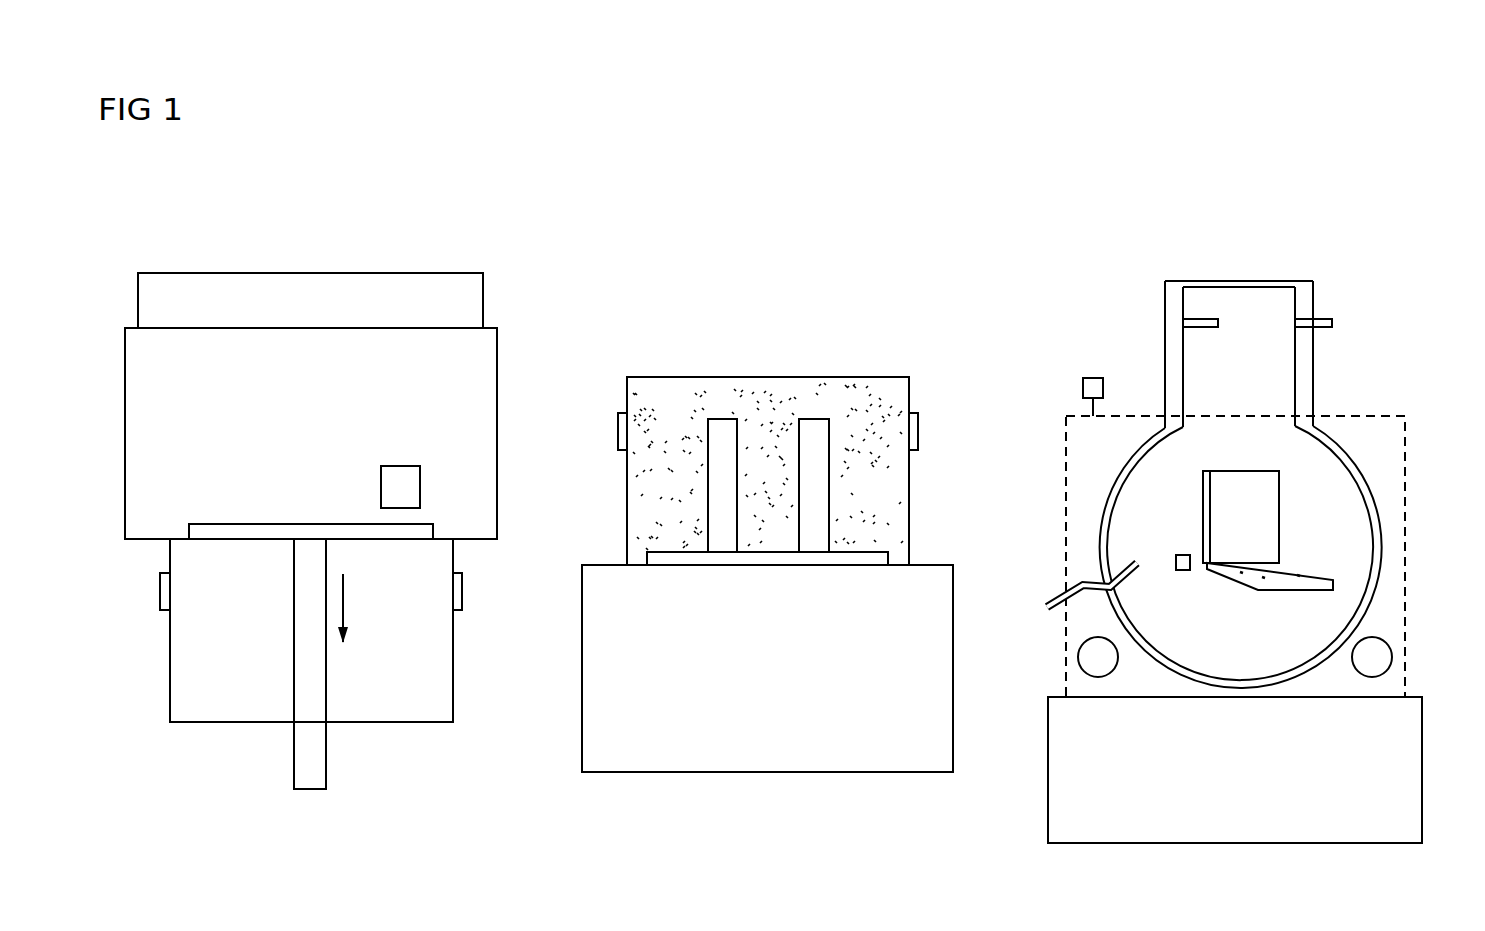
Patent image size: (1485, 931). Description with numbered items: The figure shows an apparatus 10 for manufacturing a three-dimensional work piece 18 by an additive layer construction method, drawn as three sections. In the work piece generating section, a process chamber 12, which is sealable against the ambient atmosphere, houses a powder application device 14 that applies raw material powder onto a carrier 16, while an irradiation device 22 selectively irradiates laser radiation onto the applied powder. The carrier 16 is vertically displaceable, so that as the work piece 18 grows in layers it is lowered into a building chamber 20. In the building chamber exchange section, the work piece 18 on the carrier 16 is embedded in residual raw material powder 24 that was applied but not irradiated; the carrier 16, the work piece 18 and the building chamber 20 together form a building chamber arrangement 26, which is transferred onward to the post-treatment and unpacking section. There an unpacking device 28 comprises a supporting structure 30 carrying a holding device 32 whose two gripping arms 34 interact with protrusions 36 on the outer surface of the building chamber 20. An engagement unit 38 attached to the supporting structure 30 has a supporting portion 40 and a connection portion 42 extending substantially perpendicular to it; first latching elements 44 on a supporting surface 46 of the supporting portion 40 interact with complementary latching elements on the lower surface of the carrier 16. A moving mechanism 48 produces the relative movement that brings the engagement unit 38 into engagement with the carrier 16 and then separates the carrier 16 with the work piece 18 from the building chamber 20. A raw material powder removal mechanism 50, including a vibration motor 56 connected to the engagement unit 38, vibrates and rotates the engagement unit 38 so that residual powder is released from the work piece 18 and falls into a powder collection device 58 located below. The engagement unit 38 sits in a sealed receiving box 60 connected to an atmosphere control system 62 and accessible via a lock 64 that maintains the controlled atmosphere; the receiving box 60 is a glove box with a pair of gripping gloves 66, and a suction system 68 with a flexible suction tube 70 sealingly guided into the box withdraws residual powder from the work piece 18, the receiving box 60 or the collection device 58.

The apparatus 10 is at (373, 190).
The process chamber 12 is at (485, 355).
The powder application device 14 is at (397, 466).
The carrier 16 is at (217, 524).
The work piece 18 is at (815, 392).
The building chamber 20 is at (183, 683).
The irradiation device 22 is at (311, 283).
The residual raw material powder 24 is at (687, 396).
The building chamber arrangement 26 is at (855, 374).
The unpacking device 28 is at (1285, 268).
The supporting structure 30 is at (1222, 294).
The holding device 32 is at (1392, 299).
The gripping arms 34 is at (1295, 327).
The protrusions 36 is at (160, 590).
The engagement unit 38 is at (1199, 515).
The supporting portion 40 is at (1305, 599).
The connection portion 42 is at (1244, 486).
The first latching elements 44 is at (1269, 574).
The supporting surface 46 is at (1305, 582).
The moving mechanism 48 is at (1333, 375).
The raw material powder removal mechanism 50 is at (1287, 527).
The vibration motor 56 is at (1181, 572).
The powder collection device 58 is at (1249, 685).
The receiving box 60 is at (1405, 484).
The atmosphere control system 62 is at (1089, 378).
The lock 64 is at (1198, 416).
The gripping gloves 66 is at (1098, 677).
The suction system 68 is at (1054, 580).
The flexible suction tube 70 is at (1056, 617).